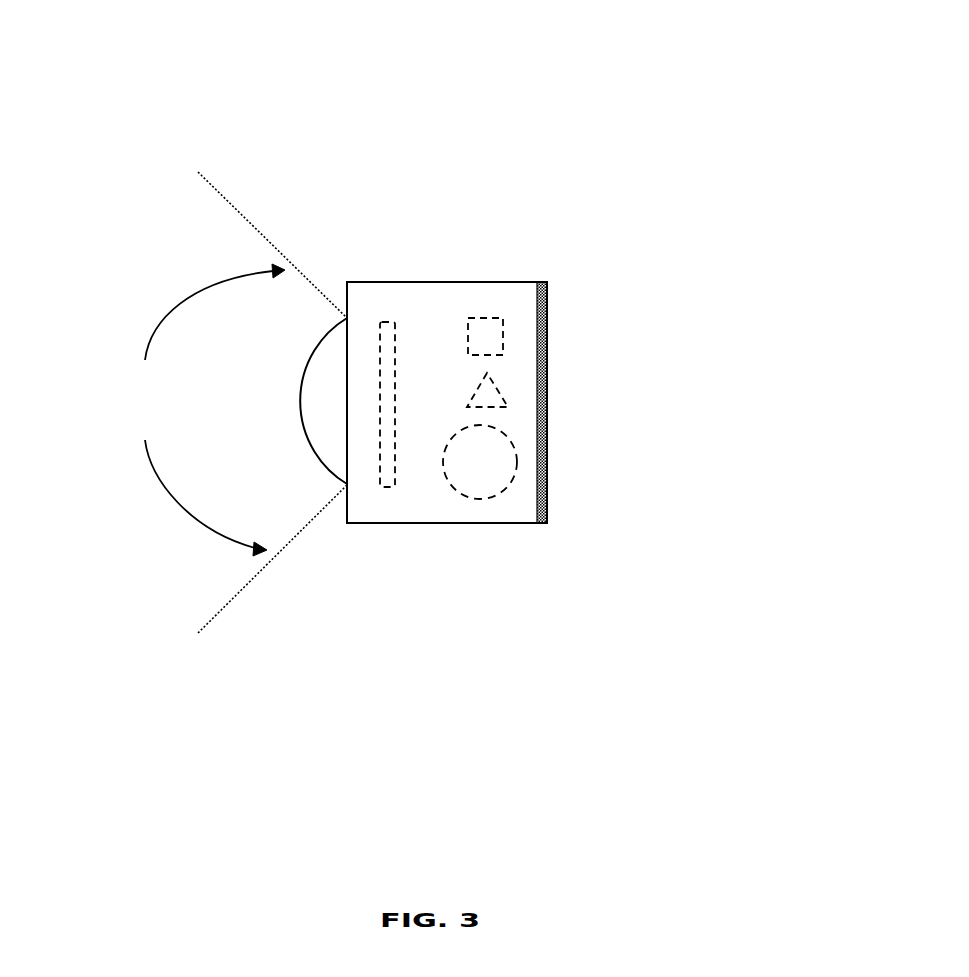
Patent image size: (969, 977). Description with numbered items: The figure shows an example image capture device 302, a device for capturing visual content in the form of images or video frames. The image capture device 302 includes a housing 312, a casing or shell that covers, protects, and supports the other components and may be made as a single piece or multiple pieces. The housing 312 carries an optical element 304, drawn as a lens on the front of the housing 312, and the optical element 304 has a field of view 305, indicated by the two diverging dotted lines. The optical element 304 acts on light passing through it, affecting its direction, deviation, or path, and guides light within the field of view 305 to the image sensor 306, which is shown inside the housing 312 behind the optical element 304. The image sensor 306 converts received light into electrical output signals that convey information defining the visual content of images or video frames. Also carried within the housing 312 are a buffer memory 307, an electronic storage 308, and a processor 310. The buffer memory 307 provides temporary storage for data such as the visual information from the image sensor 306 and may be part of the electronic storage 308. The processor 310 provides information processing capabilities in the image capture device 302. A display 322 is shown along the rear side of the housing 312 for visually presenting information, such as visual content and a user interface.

The image capture device 302 is at (502, 152).
The optical element 304 is at (322, 472).
The field of view 305 is at (198, 402).
The image sensor 306 is at (388, 322).
The buffer memory 307 is at (503, 320).
The electronic storage 308 is at (508, 407).
The processor 310 is at (480, 499).
The housing 312 is at (370, 524).
The display 322 is at (547, 318).